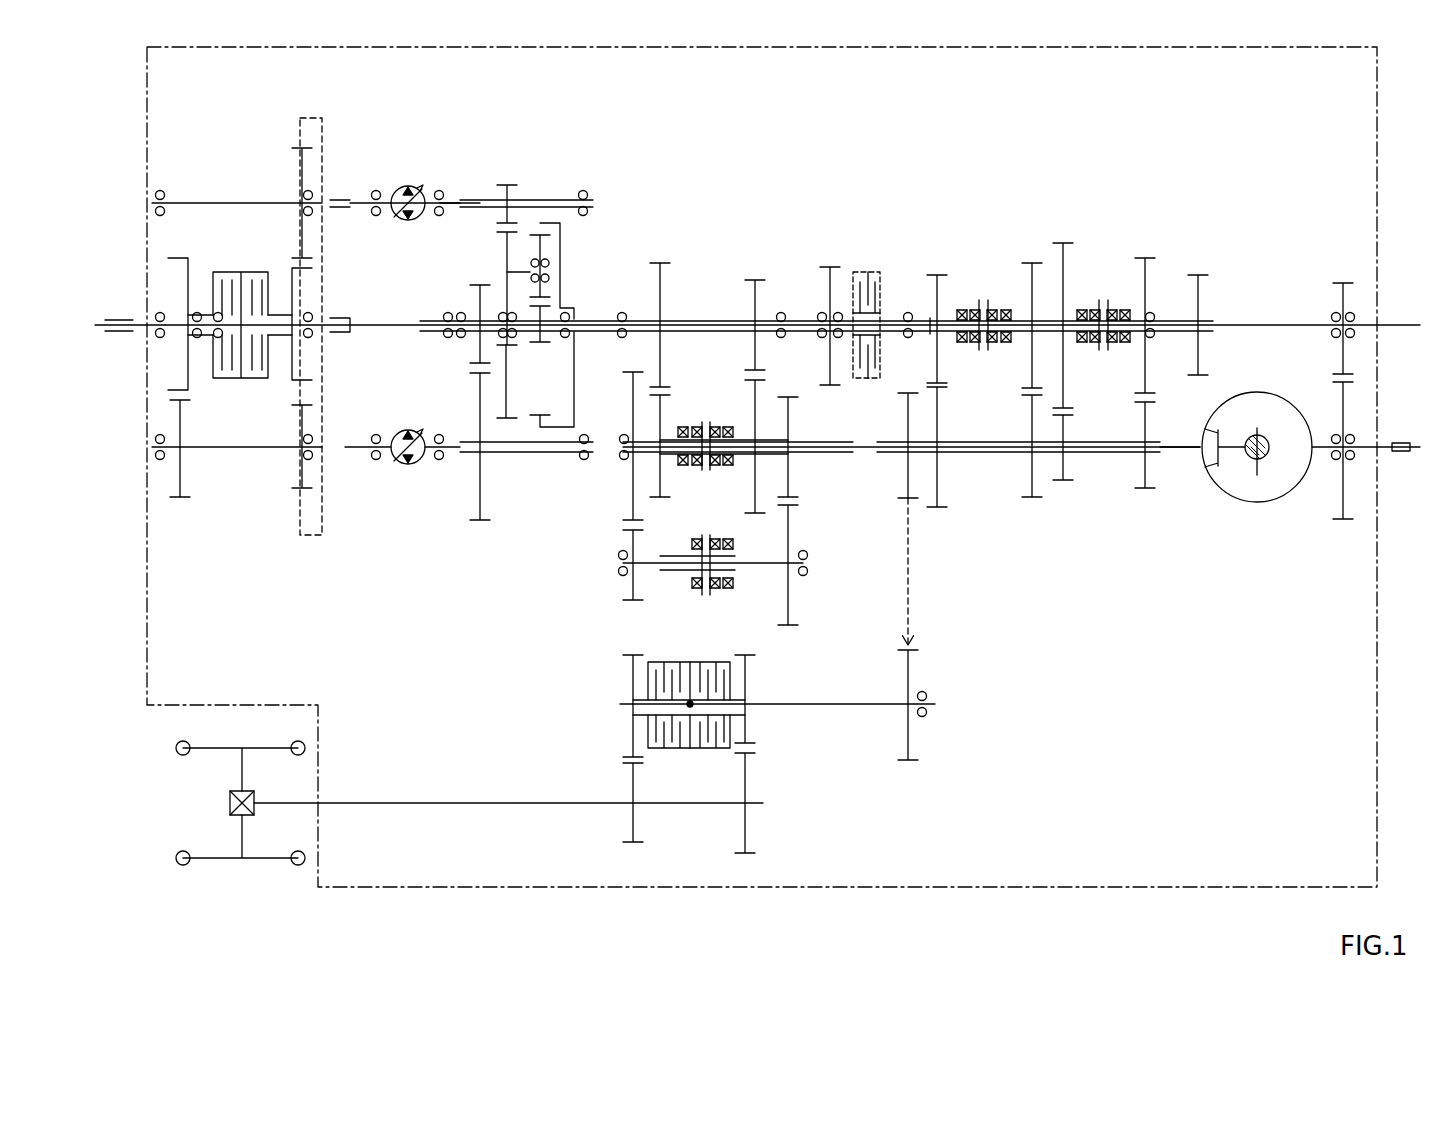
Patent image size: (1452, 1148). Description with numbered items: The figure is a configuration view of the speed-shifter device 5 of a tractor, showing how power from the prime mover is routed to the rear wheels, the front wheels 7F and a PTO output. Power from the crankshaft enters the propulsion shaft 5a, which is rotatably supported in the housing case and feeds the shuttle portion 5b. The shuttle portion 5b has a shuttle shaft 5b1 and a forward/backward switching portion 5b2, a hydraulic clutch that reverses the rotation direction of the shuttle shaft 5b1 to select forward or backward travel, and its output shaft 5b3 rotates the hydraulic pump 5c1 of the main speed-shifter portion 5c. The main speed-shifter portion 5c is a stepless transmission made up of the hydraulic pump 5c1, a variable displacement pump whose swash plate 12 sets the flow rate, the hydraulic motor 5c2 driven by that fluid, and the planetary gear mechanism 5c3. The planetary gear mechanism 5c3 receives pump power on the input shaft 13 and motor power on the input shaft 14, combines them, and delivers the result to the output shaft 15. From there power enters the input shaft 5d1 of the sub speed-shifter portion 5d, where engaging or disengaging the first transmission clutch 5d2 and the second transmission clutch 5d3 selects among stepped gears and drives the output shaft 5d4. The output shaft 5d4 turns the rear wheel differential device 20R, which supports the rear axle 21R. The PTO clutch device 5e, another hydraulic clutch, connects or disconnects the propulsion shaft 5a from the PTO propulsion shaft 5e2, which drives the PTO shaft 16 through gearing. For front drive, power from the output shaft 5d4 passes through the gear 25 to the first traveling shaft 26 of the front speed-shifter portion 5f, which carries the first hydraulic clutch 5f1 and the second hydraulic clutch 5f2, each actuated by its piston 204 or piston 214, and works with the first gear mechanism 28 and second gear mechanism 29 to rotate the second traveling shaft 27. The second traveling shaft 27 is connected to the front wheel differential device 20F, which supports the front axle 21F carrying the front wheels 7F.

The speed-shifter device 5 is at (1378, 115).
The propulsion shaft 5a is at (142, 322).
The shuttle portion 5b is at (235, 305).
The shuttle shaft 5b1 is at (168, 345).
The forward/backward switching portion 5b2 is at (250, 266).
The output shaft 5b3 is at (333, 203).
The main speed-shifter portion 5c is at (792, 312).
The hydraulic pump 5c1 is at (412, 188).
The hydraulic motor 5c2 is at (414, 465).
The planetary gear mechanism 5c3 is at (568, 255).
The sub speed-shifter portion 5d is at (910, 424).
The input shaft 5d1 is at (705, 334).
The first transmission clutch 5d2 is at (762, 470).
The second transmission clutch 5d3 is at (742, 578).
The output shaft 5d4 is at (822, 445).
The PTO clutch device 5e is at (865, 263).
The PTO propulsion shaft 5e2 is at (908, 322).
The front speed-shifter portion 5f is at (688, 704).
The first hydraulic clutch 5f1 is at (662, 653).
The second hydraulic clutch 5f2 is at (694, 762).
The front wheel 7F is at (183, 740).
The swash plate 12 is at (413, 220).
The input shaft 13 is at (562, 198).
The input shaft 14 is at (524, 456).
The output shaft 15 is at (598, 334).
The PTO shaft 16 is at (1366, 452).
The front wheel differential device 20F is at (228, 800).
The rear wheel differential device 20R is at (1257, 471).
The front axle 21F is at (240, 825).
The rear axle 21R is at (1260, 435).
The gear 25 is at (905, 482).
The first traveling shaft 26 is at (869, 706).
The second traveling shaft 27 is at (478, 806).
The first gear mechanism 28 is at (630, 728).
The second gear mechanism 29 is at (748, 678).
The piston 204 is at (678, 681).
The piston 214 is at (700, 730).